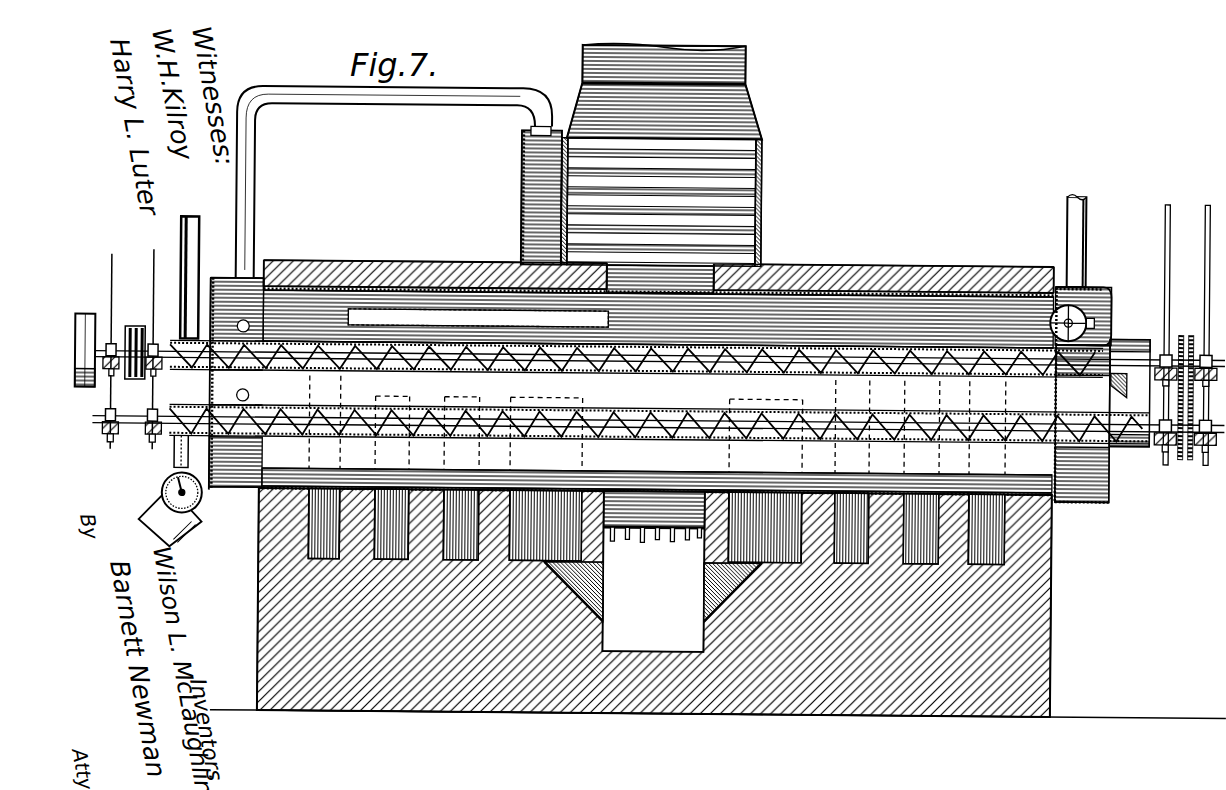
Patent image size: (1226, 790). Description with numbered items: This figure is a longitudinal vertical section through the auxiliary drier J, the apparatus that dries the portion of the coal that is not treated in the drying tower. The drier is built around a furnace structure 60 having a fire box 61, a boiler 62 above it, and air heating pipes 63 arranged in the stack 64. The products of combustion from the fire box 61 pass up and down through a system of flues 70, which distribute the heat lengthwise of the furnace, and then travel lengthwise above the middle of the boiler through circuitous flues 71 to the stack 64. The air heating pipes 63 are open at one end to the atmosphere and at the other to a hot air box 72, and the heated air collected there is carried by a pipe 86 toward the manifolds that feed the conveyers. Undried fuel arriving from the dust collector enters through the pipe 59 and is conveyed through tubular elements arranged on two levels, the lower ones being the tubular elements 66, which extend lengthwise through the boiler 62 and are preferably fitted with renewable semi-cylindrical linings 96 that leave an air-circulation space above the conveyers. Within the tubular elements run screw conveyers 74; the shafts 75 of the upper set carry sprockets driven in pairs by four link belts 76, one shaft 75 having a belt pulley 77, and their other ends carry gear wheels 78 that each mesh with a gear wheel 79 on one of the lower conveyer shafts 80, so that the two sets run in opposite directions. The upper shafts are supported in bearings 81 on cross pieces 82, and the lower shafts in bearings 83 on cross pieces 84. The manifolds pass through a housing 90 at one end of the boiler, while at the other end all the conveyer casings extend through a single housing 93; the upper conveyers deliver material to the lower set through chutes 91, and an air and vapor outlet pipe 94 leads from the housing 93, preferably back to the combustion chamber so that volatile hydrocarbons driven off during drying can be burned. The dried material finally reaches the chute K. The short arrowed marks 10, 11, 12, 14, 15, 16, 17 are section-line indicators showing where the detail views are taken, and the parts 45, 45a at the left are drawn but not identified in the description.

The section line 10 is at (220, 200).
The section line 11 is at (626, 118).
The end bearing housing 12 is at (1130, 390).
The section line 14 is at (650, 735).
The section line 15 is at (690, 398).
The section line 16 is at (190, 497).
The section line 17 is at (1090, 280).
The bracket 45 is at (172, 462).
The hand wheel 45a is at (180, 515).
The pipe 59 is at (177, 219).
The furnace structure 60 is at (633, 602).
The fire box 61 is at (632, 621).
The boiler 62 is at (433, 341).
The air heating pipes 63 is at (742, 182).
The stack 64 is at (741, 62).
The tubular elements 66 is at (772, 437).
The flues 70 is at (447, 545).
The circuitous flues 71 is at (372, 268).
The hot air box 72 is at (517, 168).
The screw conveyers 74 is at (657, 425).
The shafts 75 is at (671, 341).
The link belts 76 is at (132, 342).
The belt pulley 77 is at (80, 315).
The gear wheels 78 is at (1188, 327).
The gear wheel 79 is at (1186, 407).
The conveyer shafts 80 is at (1040, 440).
The bearings 81 is at (107, 345).
The cross pieces 82 is at (104, 372).
The bearings 83 is at (150, 410).
The cross pieces 84 is at (136, 448).
The pipe 86 is at (322, 86).
The housing 90 is at (222, 278).
The chutes 91 is at (1108, 376).
The housing 93 is at (1095, 284).
The air and vapor outlet pipe 94 is at (1063, 228).
The semi-cylindrical linings 96 is at (631, 371).
The drier J is at (1037, 641).
The chute K is at (155, 512).